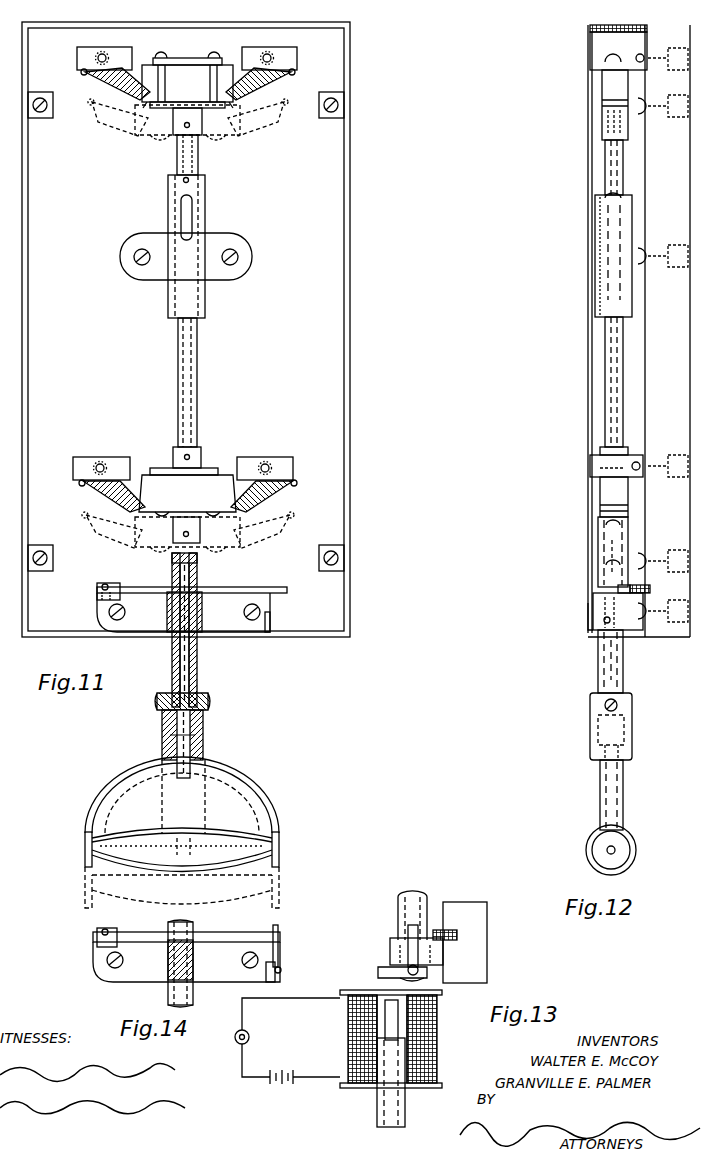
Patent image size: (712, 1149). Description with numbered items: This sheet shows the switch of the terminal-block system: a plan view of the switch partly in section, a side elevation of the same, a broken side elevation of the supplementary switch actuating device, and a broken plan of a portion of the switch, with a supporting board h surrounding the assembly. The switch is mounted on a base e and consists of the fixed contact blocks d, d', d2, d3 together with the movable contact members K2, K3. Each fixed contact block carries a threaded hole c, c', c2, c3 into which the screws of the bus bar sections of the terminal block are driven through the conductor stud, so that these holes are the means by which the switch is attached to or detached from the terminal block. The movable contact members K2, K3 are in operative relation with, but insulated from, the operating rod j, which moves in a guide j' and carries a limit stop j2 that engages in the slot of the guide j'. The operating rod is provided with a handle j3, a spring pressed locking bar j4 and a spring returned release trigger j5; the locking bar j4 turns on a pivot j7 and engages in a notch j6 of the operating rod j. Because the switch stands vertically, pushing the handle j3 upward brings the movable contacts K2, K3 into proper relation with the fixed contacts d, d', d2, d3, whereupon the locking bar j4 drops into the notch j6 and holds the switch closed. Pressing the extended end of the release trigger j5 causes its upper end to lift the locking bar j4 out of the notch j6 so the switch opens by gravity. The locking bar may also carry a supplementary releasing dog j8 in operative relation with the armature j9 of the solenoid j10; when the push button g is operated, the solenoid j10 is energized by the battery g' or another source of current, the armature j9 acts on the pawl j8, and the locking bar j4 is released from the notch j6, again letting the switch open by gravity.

In FIG. 11, the supporting board h is at (350, 302).
In FIG. 12, the supporting board h is at (590, 28).
In FIG. 11, the base e is at (288, 323).
In FIG. 12, the base e is at (663, 335).
In FIG. 11, the fixed contact block d is at (117, 51).
In FIG. 11, the fixed contact block d' is at (288, 53).
In FIG. 12, the fixed contact block d' is at (600, 47).
In FIG. 11, the fixed contact block d2 is at (85, 460).
In FIG. 11, the fixed contact block d3 is at (245, 460).
In FIG. 12, the fixed contact block d3 is at (590, 463).
In FIG. 11, the threaded hole c is at (83, 96).
In FIG. 11, the threaded hole c' is at (285, 104).
In FIG. 11, the threaded hole c2 is at (105, 465).
In FIG. 11, the threaded hole c3 is at (270, 465).
In FIG. 11, the movable contact member K2 is at (250, 95).
In FIG. 11, the movable contact member K3 is at (263, 490).
In FIG. 11, the operating rod j is at (197, 277).
In FIG. 13, the operating rod j is at (421, 892).
In FIG. 12, the operating rod j is at (614, 293).
In FIG. 11, the guide j' is at (193, 260).
In FIG. 12, the guide j' is at (613, 255).
In FIG. 11, the limit stop j2 is at (205, 200).
In FIG. 12, the limit stop j2 is at (615, 105).
In FIG. 11, the handle j3 is at (267, 826).
In FIG. 11, the spring pressed locking bar j4 is at (285, 593).
In FIG. 14, the spring pressed locking bar j4 is at (187, 953).
In FIG. 13, the spring pressed locking bar j4 is at (430, 935).
In FIG. 12, the spring pressed locking bar j4 is at (598, 593).
In FIG. 11, the spring returned release trigger j5 is at (184, 682).
In FIG. 12, the spring returned release trigger j5 is at (612, 660).
In FIG. 12, the notch j6 is at (615, 583).
In FIG. 11, the pivot j7 is at (104, 592).
In FIG. 14, the pivot j7 is at (97, 933).
In FIG. 13, the supplementary releasing dog j8 is at (385, 976).
In FIG. 13, the armature j9 is at (405, 1115).
In FIG. 13, the solenoid j10 is at (440, 1062).
In FIG. 13, the push button g is at (287, 1037).
In FIG. 13, the battery g' is at (305, 1088).